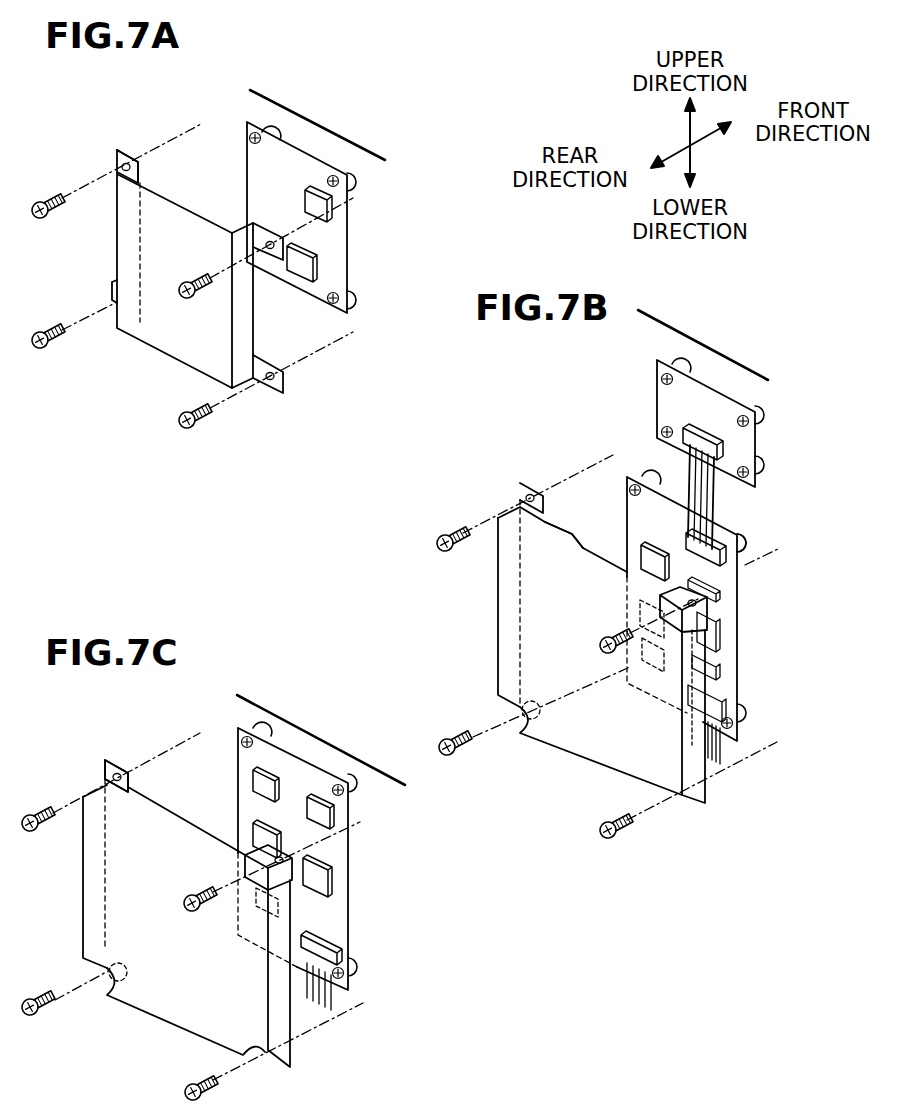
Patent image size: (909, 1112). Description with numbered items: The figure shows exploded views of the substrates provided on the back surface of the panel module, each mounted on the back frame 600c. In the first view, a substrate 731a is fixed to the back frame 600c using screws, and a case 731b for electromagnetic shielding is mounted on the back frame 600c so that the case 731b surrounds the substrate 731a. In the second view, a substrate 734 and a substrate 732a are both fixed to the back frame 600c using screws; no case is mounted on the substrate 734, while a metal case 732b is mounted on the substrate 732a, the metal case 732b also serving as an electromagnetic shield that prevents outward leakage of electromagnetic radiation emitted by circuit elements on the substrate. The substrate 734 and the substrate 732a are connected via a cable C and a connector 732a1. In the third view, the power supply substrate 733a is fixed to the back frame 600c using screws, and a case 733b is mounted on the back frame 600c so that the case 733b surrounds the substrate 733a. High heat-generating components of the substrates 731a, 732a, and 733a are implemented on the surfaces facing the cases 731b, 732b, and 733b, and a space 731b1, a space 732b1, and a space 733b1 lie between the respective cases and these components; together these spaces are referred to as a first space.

In FIG. 7A, the back frame 600c is at (308, 138).
In FIG. 7B, the back frame 600c is at (713, 375).
In FIG. 7C, the back frame 600c is at (297, 742).
In FIG. 7A, the substrate 731a is at (310, 300).
In FIG. 7A, the case 731b is at (257, 335).
In FIG. 7A, the space 731b1 is at (213, 203).
In FIG. 7B, the substrate 734 is at (657, 397).
In FIG. 7B, the cable C is at (720, 503).
In FIG. 7B, the substrate 732a is at (725, 740).
In FIG. 7B, the connector 732a1 is at (745, 558).
In FIG. 7B, the metal case 732b is at (647, 767).
In FIG. 7B, the space 732b1 is at (605, 548).
In FIG. 7C, the substrate 733a is at (350, 917).
In FIG. 7C, the case 733b is at (293, 1010).
In FIG. 7C, the space 733b1 is at (197, 827).